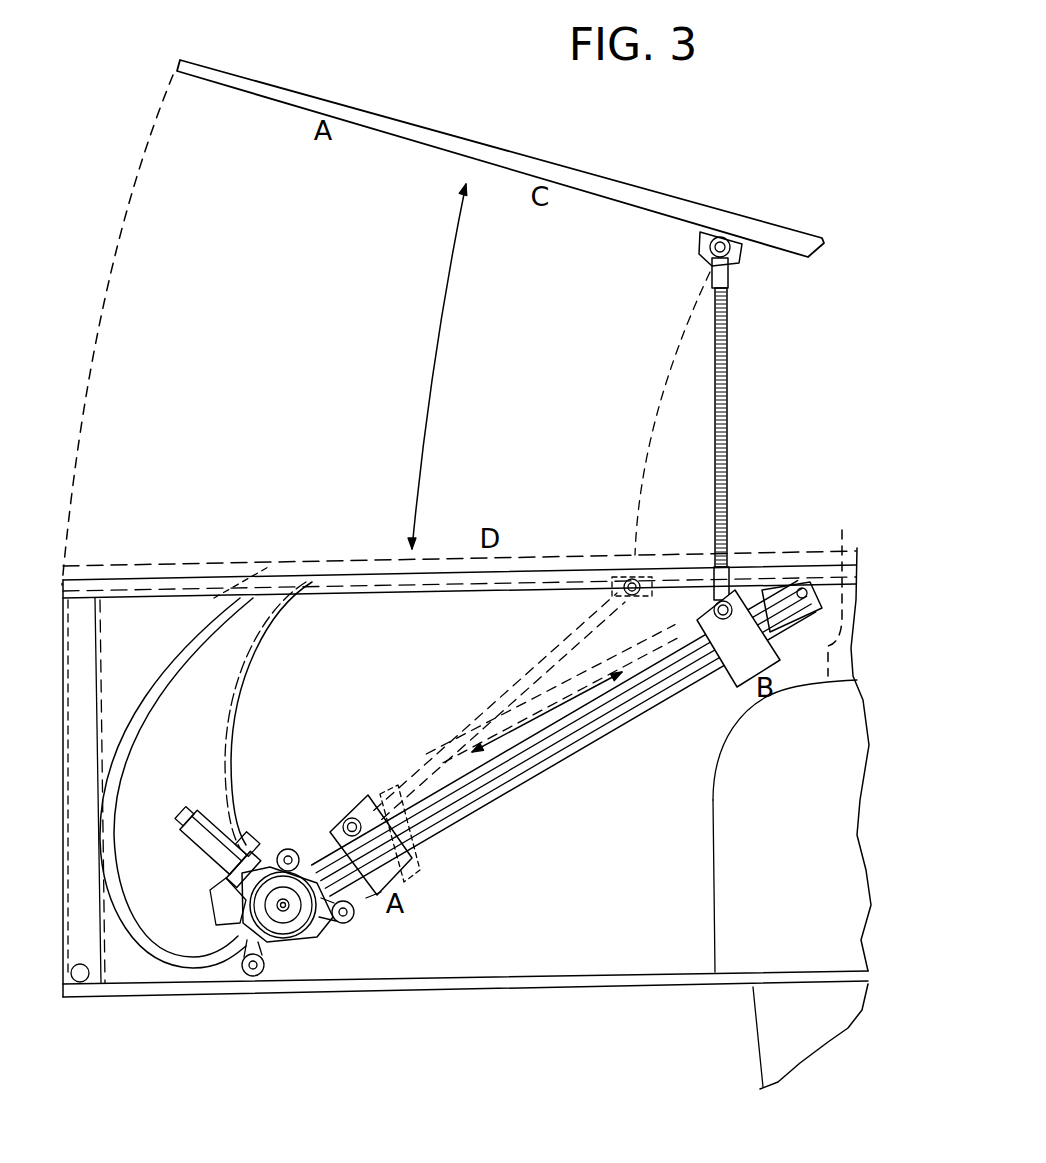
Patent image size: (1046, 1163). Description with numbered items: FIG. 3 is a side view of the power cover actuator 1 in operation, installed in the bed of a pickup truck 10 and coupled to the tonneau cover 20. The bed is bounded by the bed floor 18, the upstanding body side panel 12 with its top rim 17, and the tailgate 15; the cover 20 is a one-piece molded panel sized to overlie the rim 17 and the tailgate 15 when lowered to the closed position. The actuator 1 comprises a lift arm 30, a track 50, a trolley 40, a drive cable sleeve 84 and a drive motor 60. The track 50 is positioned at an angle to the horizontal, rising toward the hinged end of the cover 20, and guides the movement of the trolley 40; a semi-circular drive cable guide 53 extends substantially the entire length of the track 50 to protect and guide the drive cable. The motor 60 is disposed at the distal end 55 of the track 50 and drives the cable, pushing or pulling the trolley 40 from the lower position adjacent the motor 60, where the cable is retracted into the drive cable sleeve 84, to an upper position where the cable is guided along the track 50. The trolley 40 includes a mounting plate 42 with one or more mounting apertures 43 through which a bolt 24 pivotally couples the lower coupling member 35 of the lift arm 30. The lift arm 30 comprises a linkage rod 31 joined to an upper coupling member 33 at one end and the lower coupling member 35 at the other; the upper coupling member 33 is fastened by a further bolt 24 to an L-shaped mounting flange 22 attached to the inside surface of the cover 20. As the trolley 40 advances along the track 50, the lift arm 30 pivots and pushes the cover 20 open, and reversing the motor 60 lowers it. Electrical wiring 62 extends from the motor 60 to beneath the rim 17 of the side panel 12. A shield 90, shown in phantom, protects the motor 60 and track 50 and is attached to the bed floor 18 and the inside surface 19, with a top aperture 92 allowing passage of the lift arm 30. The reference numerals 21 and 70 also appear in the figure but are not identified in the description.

The cover actuator 1 is at (562, 888).
The pickup truck 10 is at (720, 1008).
The body side panel 12 is at (83, 580).
The tailgate 15 is at (87, 657).
The top rim 17 is at (212, 563).
The bed floor 18 is at (500, 976).
The inside surface 19 is at (289, 732).
The tonneau cover 20 is at (307, 90).
The glass front edge 21 is at (213, 62).
The mounting flange 22 is at (745, 258).
The bolt 24 is at (710, 247).
The lift arm 30 is at (705, 357).
The linkage rod 31 is at (729, 343).
The upper coupling member 33 is at (731, 277).
The lower coupling member 35 is at (708, 576).
The trolley 40 is at (414, 868).
The mounting plate 42 is at (414, 883).
The mounting apertures 43 is at (693, 618).
The track 50 is at (568, 758).
The drive cable guide 53 is at (460, 821).
The distal end 55 is at (283, 828).
The drive motor 60 is at (188, 820).
The electrical wiring 62 is at (258, 661).
The cable drum 70 is at (318, 928).
The drive cable sleeve 84 is at (147, 932).
The shield 90 is at (842, 552).
The top aperture 92 is at (737, 541).